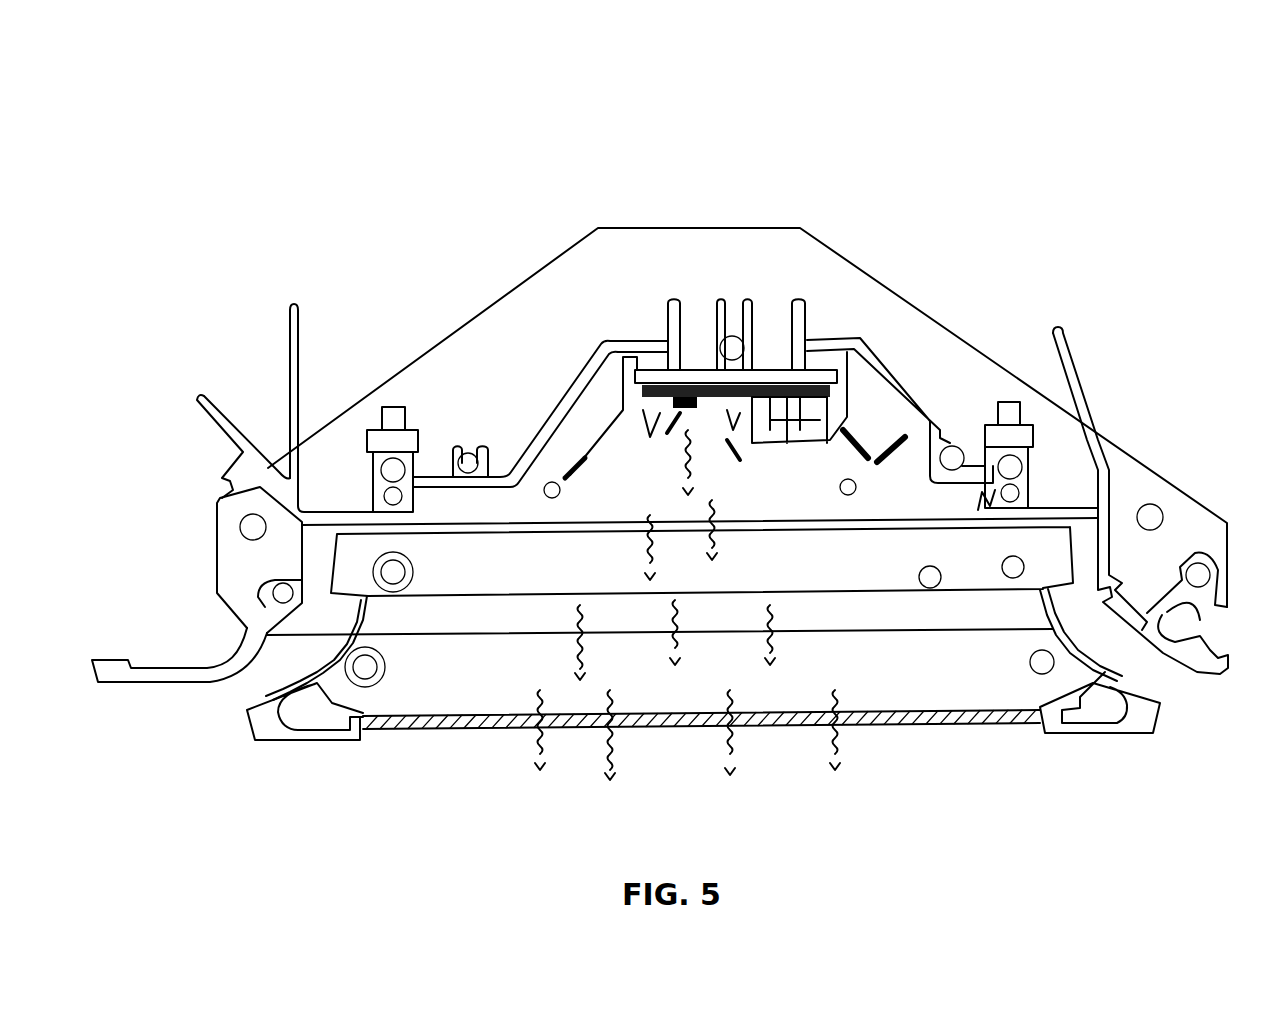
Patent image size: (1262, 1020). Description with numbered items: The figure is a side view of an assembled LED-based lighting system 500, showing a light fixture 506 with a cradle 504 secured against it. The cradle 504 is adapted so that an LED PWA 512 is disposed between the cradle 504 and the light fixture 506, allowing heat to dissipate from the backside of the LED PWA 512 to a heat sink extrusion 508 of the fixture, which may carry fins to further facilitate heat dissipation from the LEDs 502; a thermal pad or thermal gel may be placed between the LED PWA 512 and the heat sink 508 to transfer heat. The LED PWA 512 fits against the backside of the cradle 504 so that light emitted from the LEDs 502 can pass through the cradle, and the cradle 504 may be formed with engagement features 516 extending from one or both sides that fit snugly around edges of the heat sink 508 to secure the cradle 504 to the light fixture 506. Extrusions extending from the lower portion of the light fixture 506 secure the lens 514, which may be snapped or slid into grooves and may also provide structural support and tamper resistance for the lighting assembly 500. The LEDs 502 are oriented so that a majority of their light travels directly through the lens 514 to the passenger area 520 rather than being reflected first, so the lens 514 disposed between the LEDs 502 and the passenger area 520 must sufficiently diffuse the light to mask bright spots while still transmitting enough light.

The LED-based lighting system 500 is at (1092, 129).
The LEDs 502 is at (680, 400).
The cradle 504 is at (722, 440).
The light fixture 506 is at (942, 354).
The heat sink extrusion 508 is at (648, 300).
The LED PWA 512 is at (723, 377).
The lens 514 is at (885, 730).
The engagement features 516 is at (568, 484).
The passenger area 520 is at (700, 848).